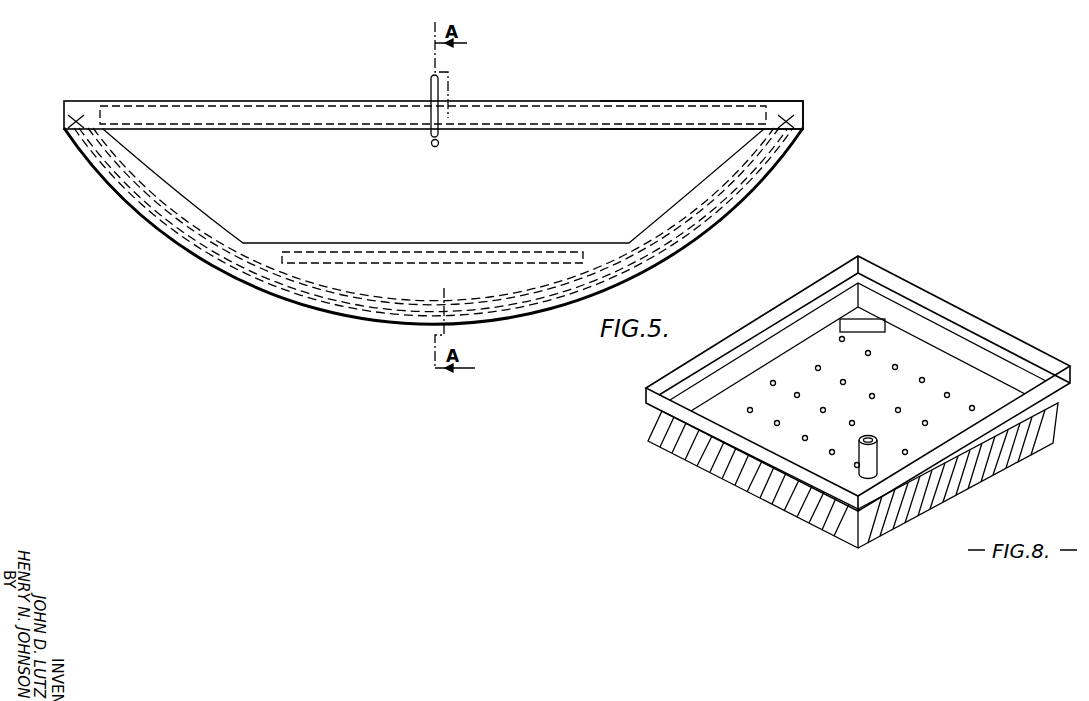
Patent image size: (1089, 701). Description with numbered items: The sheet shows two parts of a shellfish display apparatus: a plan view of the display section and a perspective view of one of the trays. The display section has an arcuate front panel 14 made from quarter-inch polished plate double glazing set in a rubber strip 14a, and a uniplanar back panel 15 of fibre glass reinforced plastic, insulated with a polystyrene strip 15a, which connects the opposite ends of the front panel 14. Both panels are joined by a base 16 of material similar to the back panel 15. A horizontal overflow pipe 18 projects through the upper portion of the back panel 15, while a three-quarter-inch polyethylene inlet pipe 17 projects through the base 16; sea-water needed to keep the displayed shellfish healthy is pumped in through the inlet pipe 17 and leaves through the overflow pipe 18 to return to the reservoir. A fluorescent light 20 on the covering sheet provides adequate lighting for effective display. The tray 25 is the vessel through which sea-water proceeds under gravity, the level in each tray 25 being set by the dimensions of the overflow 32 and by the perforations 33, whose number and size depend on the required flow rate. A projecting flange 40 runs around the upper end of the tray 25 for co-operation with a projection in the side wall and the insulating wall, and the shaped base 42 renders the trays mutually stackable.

In FIG. 5, the front panel 14 is at (376, 305).
In FIG. 5, the rubber strip 14a is at (516, 306).
In FIG. 5, the back panel 15 is at (500, 101).
In FIG. 5, the polystyrene strip 15a is at (604, 118).
In FIG. 5, the base 16 is at (200, 120).
In FIG. 5, the inlet pipe 17 is at (437, 148).
In FIG. 5, the overflow pipe 18 is at (439, 85).
In FIG. 5, the fluorescent light 20 is at (493, 250).
In FIG. 8, the tray 25 is at (947, 325).
In FIG. 8, the overflow 32 is at (872, 475).
In FIG. 8, the perforations 33 is at (951, 393).
In FIG. 8, the projecting flange 40 is at (997, 337).
In FIG. 8, the shaped base 42 is at (885, 535).